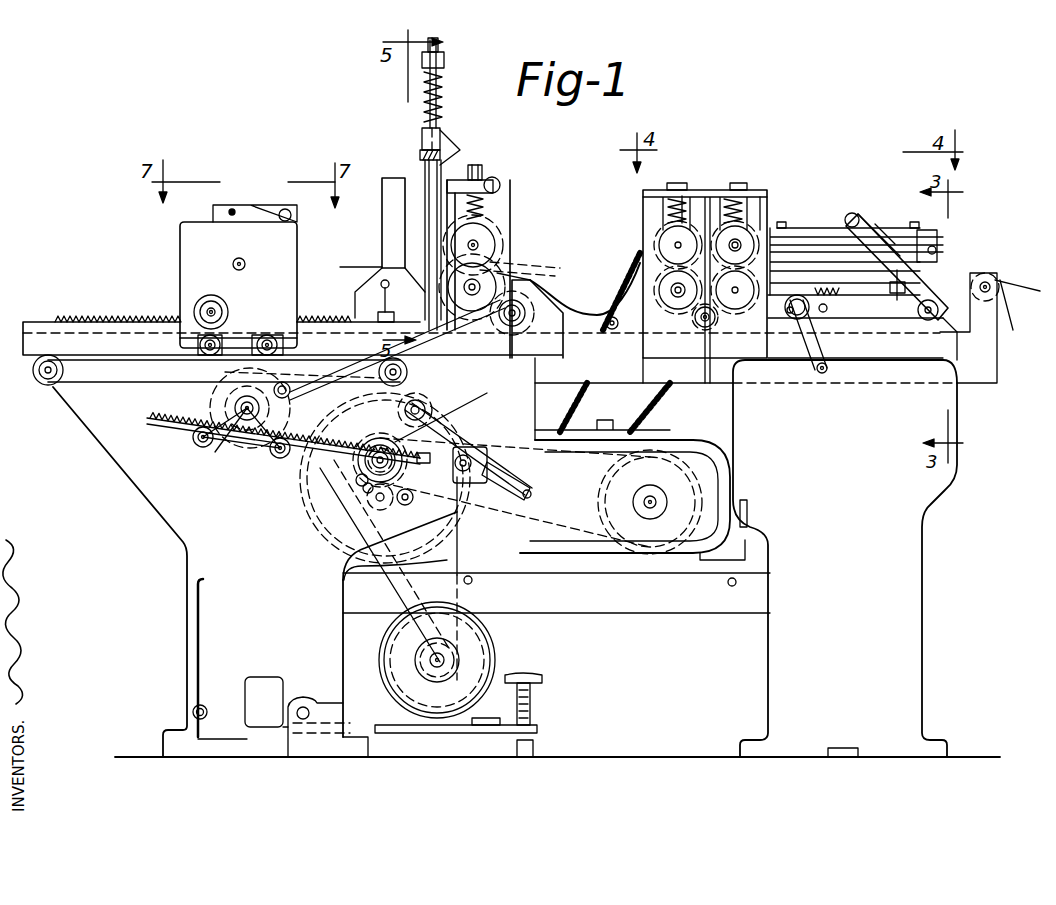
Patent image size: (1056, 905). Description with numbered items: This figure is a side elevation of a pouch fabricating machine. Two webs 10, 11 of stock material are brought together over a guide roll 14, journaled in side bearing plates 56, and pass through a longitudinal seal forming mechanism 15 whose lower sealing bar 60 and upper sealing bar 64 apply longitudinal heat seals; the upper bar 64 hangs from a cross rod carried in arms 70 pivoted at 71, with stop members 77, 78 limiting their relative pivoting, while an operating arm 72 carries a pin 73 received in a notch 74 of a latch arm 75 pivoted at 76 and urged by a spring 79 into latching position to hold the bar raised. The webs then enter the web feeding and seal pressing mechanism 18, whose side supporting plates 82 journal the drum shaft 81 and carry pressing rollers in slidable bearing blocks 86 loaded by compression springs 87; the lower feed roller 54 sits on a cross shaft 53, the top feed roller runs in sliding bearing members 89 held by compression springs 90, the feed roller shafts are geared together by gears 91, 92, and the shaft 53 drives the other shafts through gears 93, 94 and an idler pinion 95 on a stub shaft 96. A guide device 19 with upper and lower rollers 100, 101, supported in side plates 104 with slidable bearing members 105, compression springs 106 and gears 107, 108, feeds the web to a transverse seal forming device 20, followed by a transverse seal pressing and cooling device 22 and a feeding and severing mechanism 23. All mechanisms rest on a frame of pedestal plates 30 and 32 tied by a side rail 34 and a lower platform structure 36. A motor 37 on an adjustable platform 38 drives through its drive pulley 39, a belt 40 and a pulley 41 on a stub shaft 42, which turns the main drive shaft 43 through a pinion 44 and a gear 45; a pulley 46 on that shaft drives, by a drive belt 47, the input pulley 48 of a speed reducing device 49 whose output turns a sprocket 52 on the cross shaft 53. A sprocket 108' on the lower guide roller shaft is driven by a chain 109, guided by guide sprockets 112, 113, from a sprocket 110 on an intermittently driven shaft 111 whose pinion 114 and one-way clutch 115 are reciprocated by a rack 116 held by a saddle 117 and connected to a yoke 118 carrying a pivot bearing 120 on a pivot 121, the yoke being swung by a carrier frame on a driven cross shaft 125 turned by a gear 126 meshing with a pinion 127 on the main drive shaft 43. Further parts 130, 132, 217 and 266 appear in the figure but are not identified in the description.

The web 10 is at (577, 302).
The web 11 is at (1010, 312).
The guide roll 14 is at (988, 278).
The longitudinal seal forming mechanism 15 is at (833, 225).
The web feeding and seal pressing and setting mechanism 18 is at (714, 191).
The guide device 19 is at (508, 203).
The transverse seal forming device 20 is at (440, 130).
The transverse seal pressing and cooling device 22 is at (403, 177).
The feeding and severing mechanism 23 is at (180, 238).
The side plate or pedestal member 30 is at (935, 583).
The upstanding plate member 32 is at (125, 487).
The side rail member 34 is at (997, 356).
The platform structure 36 is at (572, 613).
The motor 37 is at (497, 637).
The pivotally mounted adjustable platform 38 is at (459, 734).
The drive pulley 39 is at (447, 688).
The belt 40 is at (377, 620).
The pulley 41 is at (302, 503).
The stub shaft 42 is at (379, 508).
The main drive shaft 43 is at (365, 476).
The pinion 44 is at (398, 503).
The gear 45 is at (366, 466).
The pulley 46 is at (353, 458).
The drive belt 47 is at (556, 504).
The input pulley 48 is at (717, 473).
The speed reducing device 49 is at (601, 560).
The sprocket 52 is at (621, 326).
The cross shaft 53 is at (677, 302).
The feed roller 54 is at (632, 270).
The side bearing plates 56 is at (972, 323).
The lower sealing bar 60 is at (892, 296).
The upper sealing bar 64 is at (920, 246).
The arm 70 is at (915, 268).
The pivot 71 is at (931, 322).
The operating arm 72 is at (895, 320).
The pin 73 is at (828, 316).
The notch 74 is at (797, 320).
The latch arm 75 is at (814, 352).
The pivot 76 is at (829, 370).
The stop member 77 is at (870, 230).
The stop member 78 is at (895, 233).
The spring 79 is at (836, 297).
The shaft 81 is at (736, 302).
The side supporting plates 82 is at (770, 208).
The slidable bearing block 86 is at (755, 228).
The compression spring 87 is at (748, 207).
The sliding bearing member 89 is at (668, 198).
The compression spring 90 is at (677, 200).
The gear 91 is at (668, 303).
The gear 92 is at (656, 245).
The gear 93 is at (792, 312).
The gear 94 is at (760, 253).
The idler pinion 95 is at (709, 327).
The stub shaft 96 is at (704, 328).
The upper roller 100 is at (500, 240).
The lower roller 101 is at (545, 252).
The side supporting plates 104 is at (505, 253).
The slidable bearing member 105 is at (497, 183).
The compression spring 106 is at (483, 177).
The gear 107 is at (503, 220).
The gear 108 is at (541, 257).
The sprocket 108' is at (531, 273).
The driving chain 109 is at (455, 372).
The sprocket 110 is at (222, 396).
The intermittently driven cross shaft 111 is at (240, 432).
The guide sprocket 112 is at (402, 406).
The guide sprocket 113 is at (455, 366).
The pinion 114 is at (185, 447).
The one-way clutch 115 is at (285, 401).
The reciprocating rack 116 is at (170, 427).
The supporting saddle 117 is at (268, 452).
The yoke 118 is at (488, 441).
The pivot bearing 120 is at (508, 458).
The pivot 121 is at (528, 478).
The driven cross shaft 125 is at (428, 424).
The gear 126 is at (484, 400).
The pinion 127 is at (366, 493).
The nut 130 is at (420, 152).
The wedge 132 is at (452, 150).
The bar 217 is at (103, 388).
The roller 266 is at (229, 306).